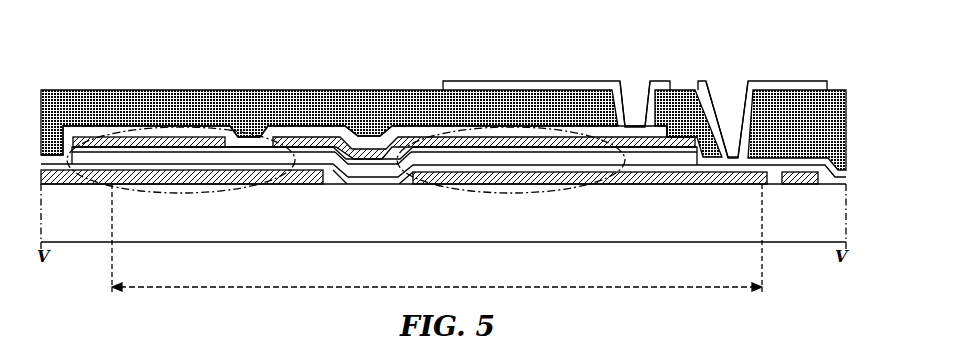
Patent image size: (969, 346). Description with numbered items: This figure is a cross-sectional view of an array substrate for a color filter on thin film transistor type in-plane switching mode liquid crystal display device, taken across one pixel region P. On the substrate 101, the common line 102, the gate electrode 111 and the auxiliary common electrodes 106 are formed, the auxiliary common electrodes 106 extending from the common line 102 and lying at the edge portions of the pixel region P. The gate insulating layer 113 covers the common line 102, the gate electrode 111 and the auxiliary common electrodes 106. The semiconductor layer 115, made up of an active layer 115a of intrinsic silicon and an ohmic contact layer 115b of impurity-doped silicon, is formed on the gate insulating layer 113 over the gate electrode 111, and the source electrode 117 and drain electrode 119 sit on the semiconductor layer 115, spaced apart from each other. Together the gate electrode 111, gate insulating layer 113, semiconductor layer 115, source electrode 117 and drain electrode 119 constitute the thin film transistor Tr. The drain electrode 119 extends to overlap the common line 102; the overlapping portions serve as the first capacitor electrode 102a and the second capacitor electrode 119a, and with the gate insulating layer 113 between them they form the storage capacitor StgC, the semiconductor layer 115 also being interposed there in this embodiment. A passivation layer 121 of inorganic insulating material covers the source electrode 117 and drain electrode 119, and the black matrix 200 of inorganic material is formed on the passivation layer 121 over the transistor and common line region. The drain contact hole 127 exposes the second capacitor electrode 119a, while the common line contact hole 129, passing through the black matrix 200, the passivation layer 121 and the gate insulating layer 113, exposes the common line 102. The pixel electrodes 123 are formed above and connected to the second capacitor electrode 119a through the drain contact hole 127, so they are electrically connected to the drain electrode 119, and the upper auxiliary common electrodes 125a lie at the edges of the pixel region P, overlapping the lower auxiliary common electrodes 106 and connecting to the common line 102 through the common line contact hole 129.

The substrate 101 is at (846, 228).
The common line 102 is at (510, 178).
The first capacitor electrode 102a is at (683, 178).
The auxiliary common electrodes 106 is at (787, 179).
The gate electrode 111 is at (71, 168).
The gate insulating layer 113 is at (364, 172).
The semiconductor layer 115 is at (184, 218).
The active layer 115a is at (178, 160).
The ohmic contact layer 115b is at (147, 152).
The source electrode 117 is at (112, 146).
The drain electrode 119 is at (295, 142).
The second capacitor electrode 119a is at (667, 130).
The passivation layer 121 is at (405, 127).
The pixel electrodes 123 is at (565, 81).
The auxiliary common electrodes 125a is at (778, 81).
The drain contact hole 127 is at (628, 96).
The common line contact hole 129 is at (730, 96).
The black matrix 200 is at (222, 97).
The thin film transistor Tr is at (240, 192).
The storage capacitor StgC is at (563, 194).
The pixel region P is at (437, 238).